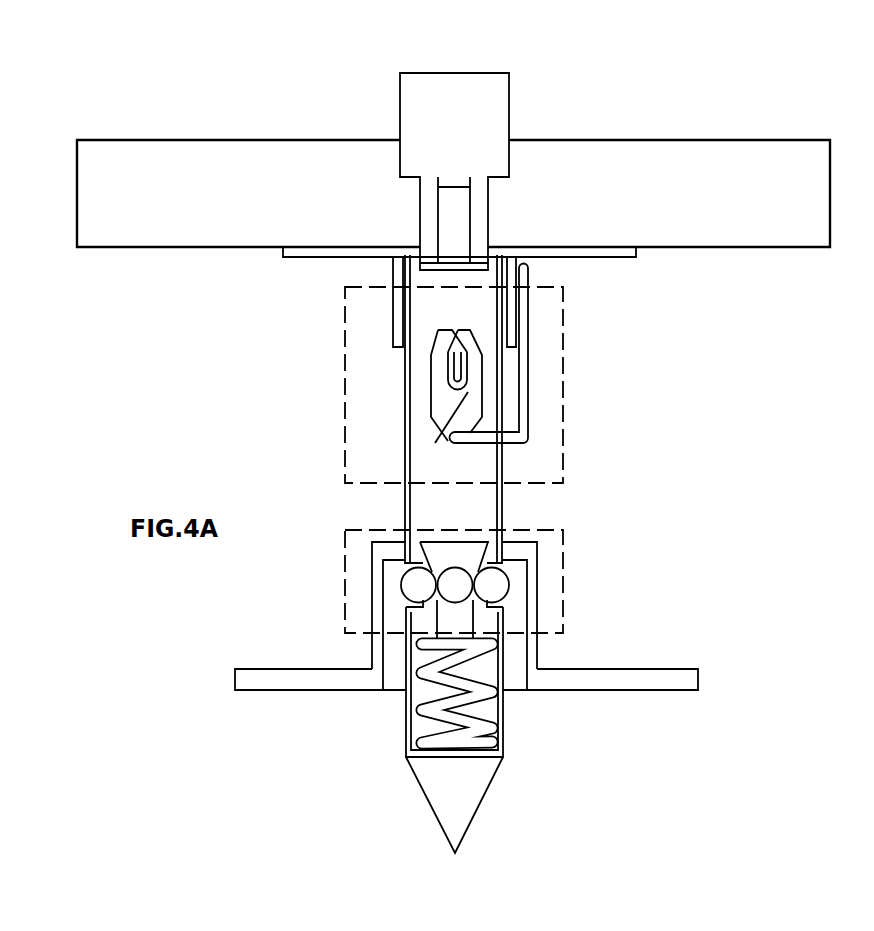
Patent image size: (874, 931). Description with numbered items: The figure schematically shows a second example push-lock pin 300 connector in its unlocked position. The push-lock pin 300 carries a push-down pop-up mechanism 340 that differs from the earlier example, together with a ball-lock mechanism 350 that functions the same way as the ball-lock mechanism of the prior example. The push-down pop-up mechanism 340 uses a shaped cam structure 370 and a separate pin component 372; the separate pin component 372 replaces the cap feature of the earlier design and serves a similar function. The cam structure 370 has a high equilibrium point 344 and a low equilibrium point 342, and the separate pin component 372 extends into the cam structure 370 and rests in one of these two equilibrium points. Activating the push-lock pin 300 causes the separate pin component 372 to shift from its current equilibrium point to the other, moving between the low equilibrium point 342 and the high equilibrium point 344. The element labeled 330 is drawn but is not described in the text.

The push-lock pin 300 is at (258, 358).
The actuator block 330 is at (473, 97).
The push-down pop-up mechanism 340 is at (563, 324).
The low equilibrium point 342 is at (447, 435).
The high equilibrium point 344 is at (455, 378).
The ball-lock mechanism 350 is at (563, 575).
The cam structure 370 is at (479, 368).
The separate pin component 372 is at (529, 431).